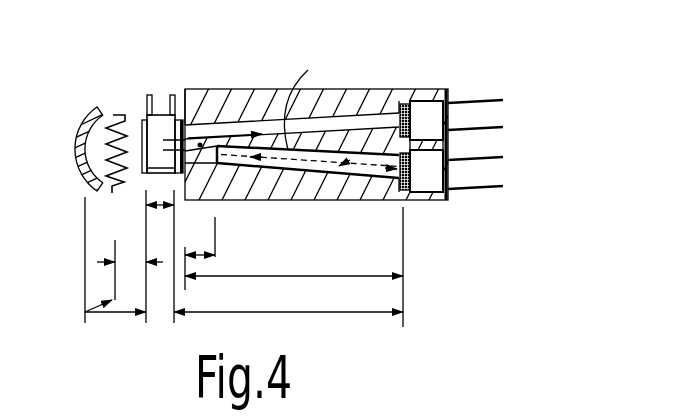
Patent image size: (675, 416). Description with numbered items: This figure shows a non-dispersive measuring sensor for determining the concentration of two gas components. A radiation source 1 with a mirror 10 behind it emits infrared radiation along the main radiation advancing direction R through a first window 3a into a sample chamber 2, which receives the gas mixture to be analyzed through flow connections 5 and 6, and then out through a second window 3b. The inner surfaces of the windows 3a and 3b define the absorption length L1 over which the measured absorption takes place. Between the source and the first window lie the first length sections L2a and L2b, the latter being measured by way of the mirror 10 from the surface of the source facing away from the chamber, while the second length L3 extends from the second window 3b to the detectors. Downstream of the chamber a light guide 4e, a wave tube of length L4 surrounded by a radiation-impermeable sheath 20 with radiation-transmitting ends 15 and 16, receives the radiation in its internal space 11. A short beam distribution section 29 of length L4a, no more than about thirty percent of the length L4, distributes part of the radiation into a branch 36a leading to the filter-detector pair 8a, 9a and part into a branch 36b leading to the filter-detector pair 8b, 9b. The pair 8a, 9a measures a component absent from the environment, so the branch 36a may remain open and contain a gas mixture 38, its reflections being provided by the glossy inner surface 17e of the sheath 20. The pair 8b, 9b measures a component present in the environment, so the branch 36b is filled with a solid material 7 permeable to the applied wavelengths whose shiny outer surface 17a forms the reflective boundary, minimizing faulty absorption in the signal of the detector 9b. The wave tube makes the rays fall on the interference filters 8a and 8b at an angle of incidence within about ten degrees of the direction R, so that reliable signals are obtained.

The radiation source 1 is at (127, 130).
The sample chamber 2 is at (158, 130).
The first window 3a is at (143, 170).
The second window 3b is at (181, 175).
The light guide 4e is at (263, 200).
The flow connection 5 is at (148, 88).
The flow connection 6 is at (174, 97).
The solid material 7 is at (313, 163).
The optical filter 8a is at (428, 110).
The optical filter 8b is at (405, 203).
The detector 9a is at (446, 93).
The detector 9b is at (435, 173).
The mirror 10 is at (85, 120).
The internal space 11 is at (303, 128).
The radiation-transmitting end 15 is at (192, 118).
The radiation-transmitting end 16 is at (393, 118).
The outer surface of the solid material 17a is at (340, 178).
The inner surface of the sheath 17e is at (378, 115).
The sheath 20 is at (257, 193).
The beam distribution section 29 is at (200, 145).
The branch 36a is at (342, 122).
The branch 36b is at (400, 207).
The gas mixture 38 is at (272, 128).
The main radiation advancing direction R is at (192, 125).
The absorption length L1 is at (160, 256).
The first length section L2a is at (130, 270).
The first length section L2b is at (115, 271).
The second length L3 is at (288, 327).
The wave tube length L4 is at (294, 267).
The beam distribution section length L4a is at (212, 258).